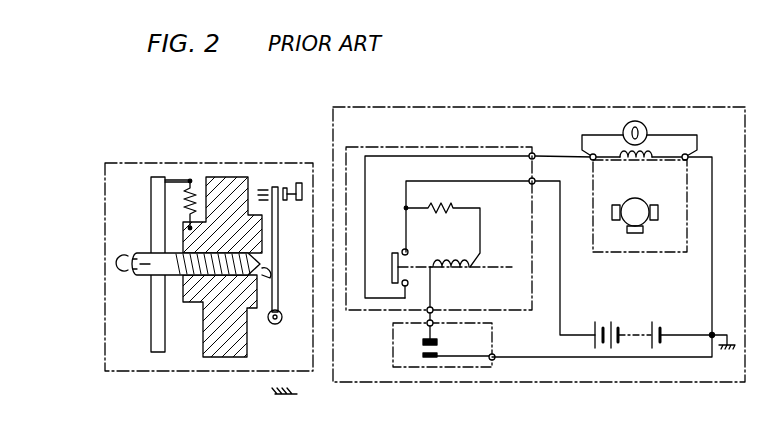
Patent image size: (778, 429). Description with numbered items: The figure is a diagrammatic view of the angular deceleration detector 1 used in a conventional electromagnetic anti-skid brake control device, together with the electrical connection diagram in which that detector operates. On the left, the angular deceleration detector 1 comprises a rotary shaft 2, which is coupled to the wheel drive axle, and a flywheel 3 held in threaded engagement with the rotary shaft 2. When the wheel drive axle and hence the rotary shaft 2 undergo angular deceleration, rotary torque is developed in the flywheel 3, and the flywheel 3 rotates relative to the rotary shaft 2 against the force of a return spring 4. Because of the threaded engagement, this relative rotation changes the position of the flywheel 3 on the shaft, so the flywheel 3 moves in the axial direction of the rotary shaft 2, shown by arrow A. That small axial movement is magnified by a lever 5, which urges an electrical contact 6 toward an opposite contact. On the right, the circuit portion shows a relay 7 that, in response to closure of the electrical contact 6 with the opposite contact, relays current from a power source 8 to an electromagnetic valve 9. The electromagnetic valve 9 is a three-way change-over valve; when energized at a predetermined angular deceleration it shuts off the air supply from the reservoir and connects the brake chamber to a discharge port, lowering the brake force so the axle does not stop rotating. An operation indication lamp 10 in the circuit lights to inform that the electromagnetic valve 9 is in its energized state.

The angular deceleration detector 1 is at (123, 371).
The rotary shaft 2 is at (136, 277).
The flywheel 3 is at (223, 358).
The return spring 4 is at (198, 188).
The lever 5 is at (279, 277).
The electrical contact 6 is at (288, 186).
The relay 7 is at (508, 118).
The power source 8 is at (630, 336).
The electromagnetic valve 9 is at (687, 200).
The operation indication lamp 10 is at (635, 121).